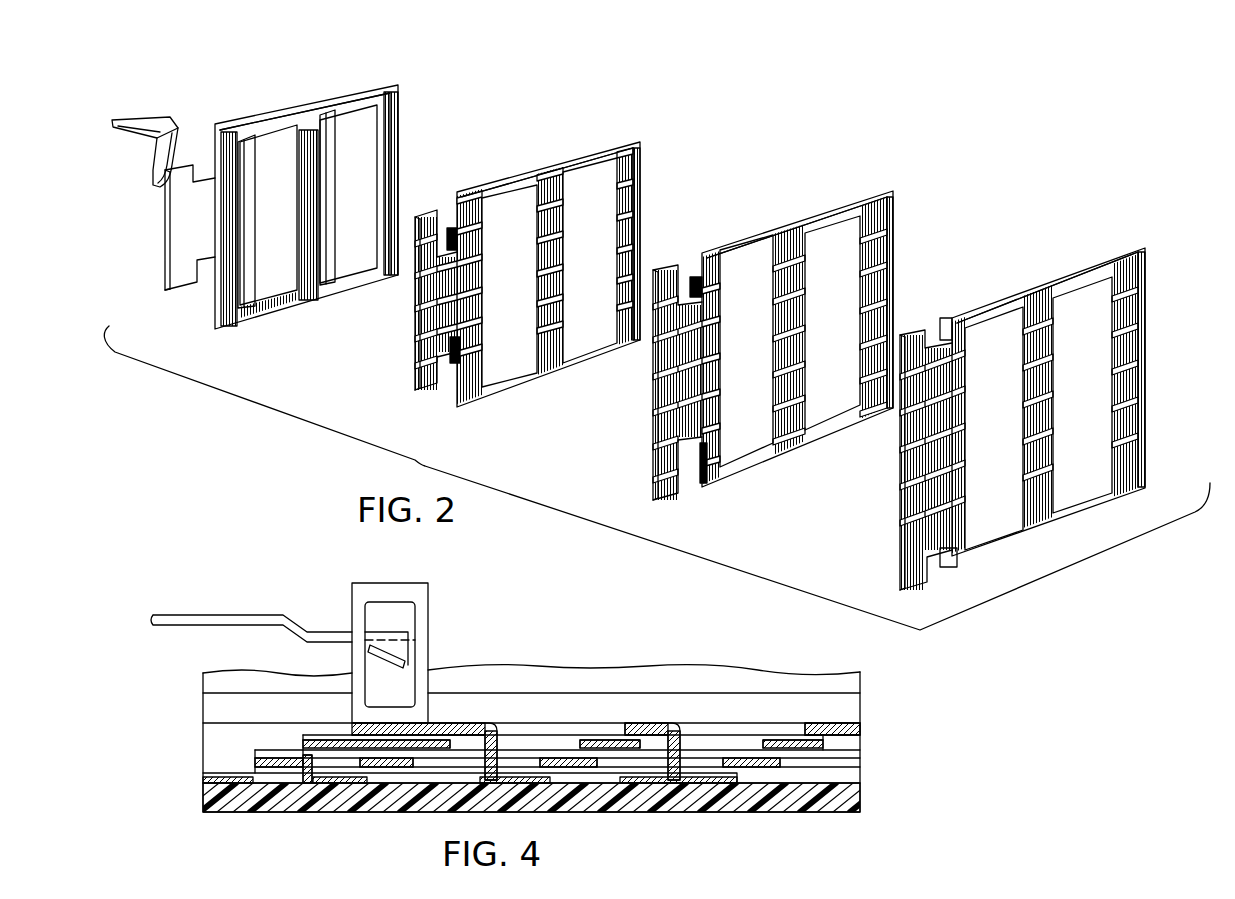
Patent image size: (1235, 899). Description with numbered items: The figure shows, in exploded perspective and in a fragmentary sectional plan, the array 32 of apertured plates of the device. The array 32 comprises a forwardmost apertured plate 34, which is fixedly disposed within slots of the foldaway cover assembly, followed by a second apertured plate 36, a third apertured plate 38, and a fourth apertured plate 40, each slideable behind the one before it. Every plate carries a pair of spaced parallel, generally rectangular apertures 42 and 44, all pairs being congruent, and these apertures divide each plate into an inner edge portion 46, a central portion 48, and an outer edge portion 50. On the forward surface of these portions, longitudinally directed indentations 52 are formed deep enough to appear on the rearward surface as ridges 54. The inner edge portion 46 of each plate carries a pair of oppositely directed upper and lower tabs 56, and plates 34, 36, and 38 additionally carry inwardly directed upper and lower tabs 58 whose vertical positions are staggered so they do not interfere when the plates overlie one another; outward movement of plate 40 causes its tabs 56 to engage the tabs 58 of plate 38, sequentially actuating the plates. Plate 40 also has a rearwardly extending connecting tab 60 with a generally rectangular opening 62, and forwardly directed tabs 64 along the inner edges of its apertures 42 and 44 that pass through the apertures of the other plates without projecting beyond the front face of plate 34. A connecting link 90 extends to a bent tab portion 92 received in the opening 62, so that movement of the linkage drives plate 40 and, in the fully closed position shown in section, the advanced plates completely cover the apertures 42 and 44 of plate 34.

In FIG. 2, the array 32 is at (420, 462).
In FIG. 2, the forwardmost apertured plate 34 is at (1136, 250).
In FIG. 2, the second apertured plate 36 is at (878, 183).
In FIG. 2, the third apertured plate 38 is at (633, 140).
In FIG. 2, the fourth apertured plate 40 is at (394, 88).
In FIG. 2, the aperture 42 is at (273, 252).
In FIG. 2, the aperture 44 is at (353, 225).
In FIG. 4, the aperture 44 is at (427, 783).
In FIG. 2, the inner edge portion 46 is at (185, 238).
In FIG. 2, the central portion 48 is at (305, 127).
In FIG. 2, the outer edge portion 50 is at (392, 152).
In FIG. 2, the indentations 52 is at (533, 278).
In FIG. 2, the ridges 54 is at (615, 225).
In FIG. 2, the oppositely directed upper and lower tabs 56 is at (183, 182).
In FIG. 2, the inwardly directed upper and lower tabs 58 is at (459, 231).
In FIG. 2, the connecting tab 60 is at (172, 140).
In FIG. 4, the connecting tab 60 is at (428, 626).
In FIG. 2, the rectangular opening 62 is at (150, 120).
In FIG. 4, the rectangular opening 62 is at (405, 609).
In FIG. 2, the forwardly directed tabs 64 is at (248, 160).
In FIG. 4, the connecting link 90 is at (262, 620).
In FIG. 4, the bent tab portion 92 is at (408, 648).